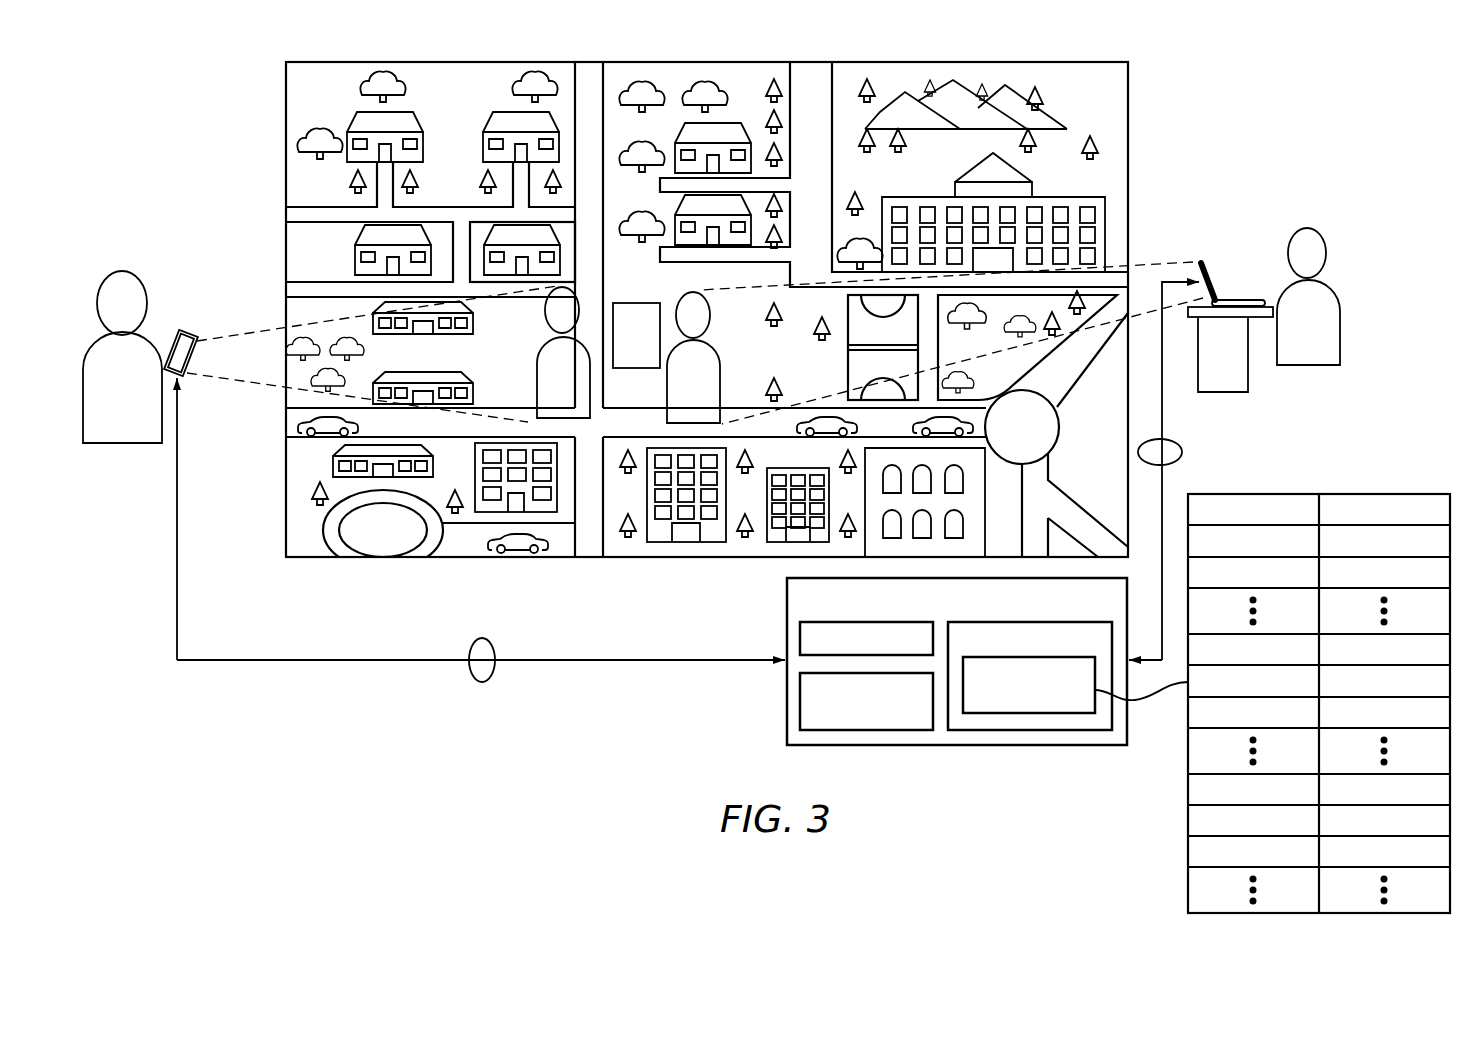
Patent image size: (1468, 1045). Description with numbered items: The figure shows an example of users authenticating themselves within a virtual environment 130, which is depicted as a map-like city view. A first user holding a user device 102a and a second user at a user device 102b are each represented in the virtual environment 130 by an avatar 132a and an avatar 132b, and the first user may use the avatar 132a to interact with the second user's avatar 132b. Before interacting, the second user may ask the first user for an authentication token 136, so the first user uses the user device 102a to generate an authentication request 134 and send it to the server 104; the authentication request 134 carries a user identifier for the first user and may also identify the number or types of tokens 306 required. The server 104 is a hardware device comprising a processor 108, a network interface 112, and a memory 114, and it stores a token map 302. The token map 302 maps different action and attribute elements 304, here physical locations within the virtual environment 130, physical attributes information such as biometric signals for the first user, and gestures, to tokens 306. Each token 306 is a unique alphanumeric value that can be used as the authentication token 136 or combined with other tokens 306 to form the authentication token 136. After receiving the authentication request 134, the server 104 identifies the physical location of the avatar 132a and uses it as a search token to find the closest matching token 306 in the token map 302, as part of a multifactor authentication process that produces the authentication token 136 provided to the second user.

The user device 102a is at (197, 338).
The user device 102b is at (1202, 260).
The server 104 is at (957, 661).
The processor 108 is at (866, 638).
The network interface 112 is at (866, 701).
The memory 114 is at (1030, 676).
The virtual environment 130 is at (1128, 106).
The avatar 132a is at (537, 343).
The avatar 132b is at (720, 346).
The authentication request 134 is at (486, 680).
The authentication token 136 is at (1182, 447).
The token map 302 is at (1029, 685).
The action and attribute elements 304 is at (1273, 494).
The tokens 306 is at (1388, 494).